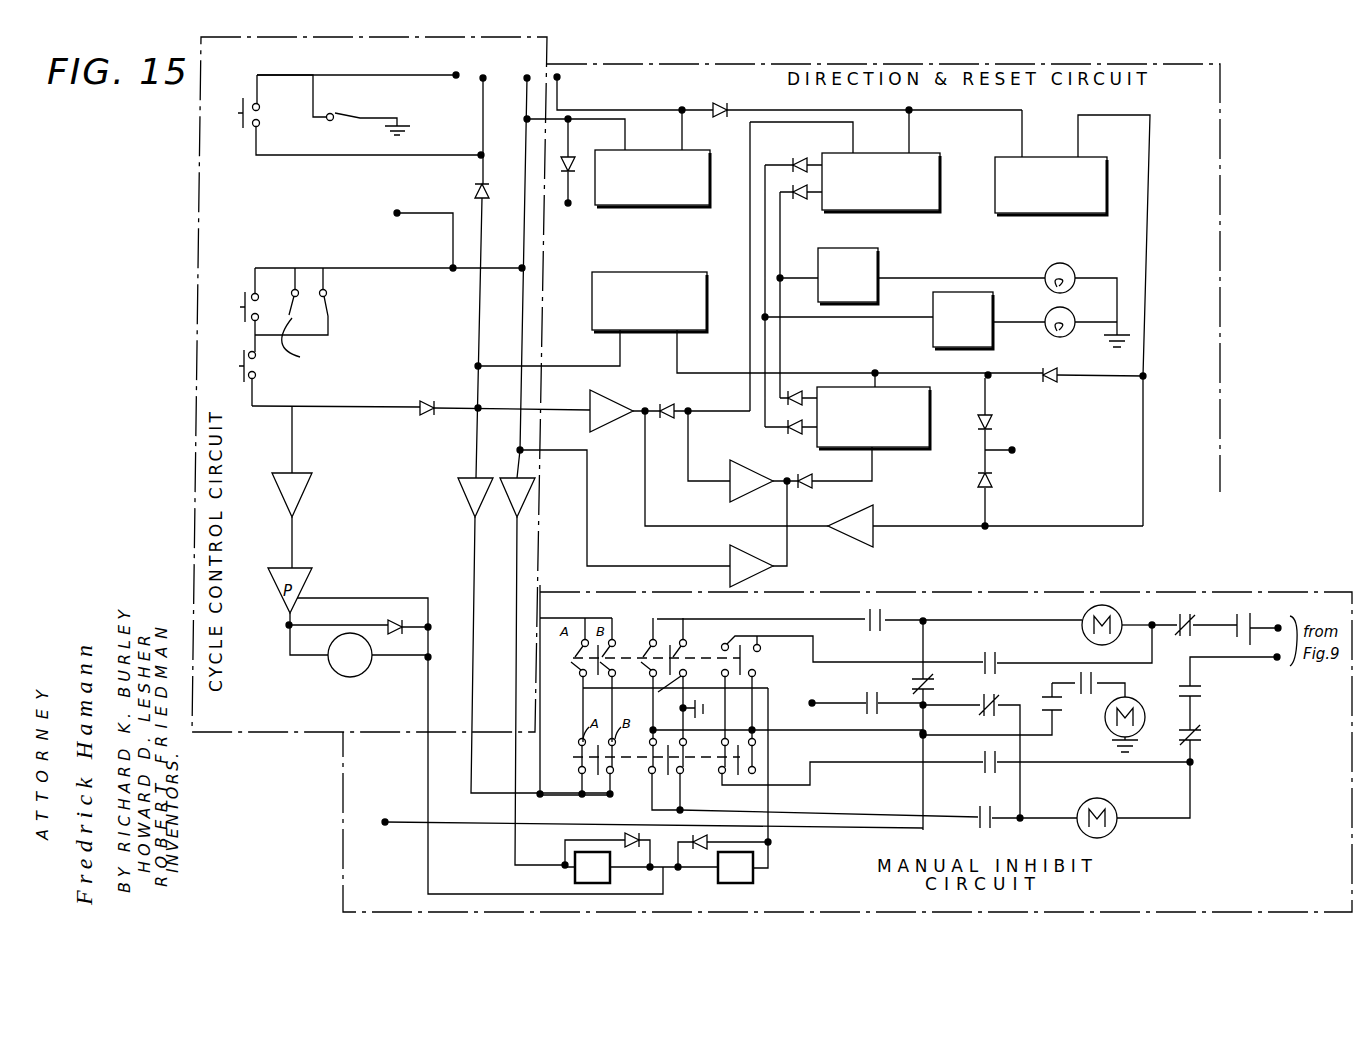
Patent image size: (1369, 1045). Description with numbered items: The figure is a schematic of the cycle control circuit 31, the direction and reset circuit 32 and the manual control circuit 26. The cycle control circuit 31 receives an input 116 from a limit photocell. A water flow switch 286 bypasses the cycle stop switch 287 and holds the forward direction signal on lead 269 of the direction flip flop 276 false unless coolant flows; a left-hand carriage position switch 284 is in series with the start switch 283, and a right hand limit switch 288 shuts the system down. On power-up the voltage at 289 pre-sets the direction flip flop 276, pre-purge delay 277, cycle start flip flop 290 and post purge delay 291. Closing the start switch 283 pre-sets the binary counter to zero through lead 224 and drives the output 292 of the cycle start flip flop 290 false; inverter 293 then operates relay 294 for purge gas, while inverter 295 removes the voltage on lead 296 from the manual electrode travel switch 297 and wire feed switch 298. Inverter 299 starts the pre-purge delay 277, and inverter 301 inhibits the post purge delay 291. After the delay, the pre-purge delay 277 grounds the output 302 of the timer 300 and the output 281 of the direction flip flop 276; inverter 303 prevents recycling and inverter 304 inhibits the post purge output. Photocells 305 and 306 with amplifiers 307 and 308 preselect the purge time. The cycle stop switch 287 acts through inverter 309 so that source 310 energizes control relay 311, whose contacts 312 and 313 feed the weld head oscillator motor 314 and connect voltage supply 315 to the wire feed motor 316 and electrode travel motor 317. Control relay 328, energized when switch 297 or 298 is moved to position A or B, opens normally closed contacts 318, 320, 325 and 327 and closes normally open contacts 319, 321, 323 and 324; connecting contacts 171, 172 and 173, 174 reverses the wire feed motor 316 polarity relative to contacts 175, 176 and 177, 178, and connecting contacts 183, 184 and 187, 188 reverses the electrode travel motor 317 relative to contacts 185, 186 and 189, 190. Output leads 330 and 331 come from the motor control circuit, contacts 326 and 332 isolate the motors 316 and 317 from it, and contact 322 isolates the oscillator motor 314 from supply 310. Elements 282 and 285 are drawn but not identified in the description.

The manual control circuit 26 is at (343, 800).
The cycle control circuit 31 is at (198, 165).
The direction and reset circuit 32 is at (1222, 292).
The input 116 is at (396, 211).
The contact 171 is at (651, 641).
The contact 172 is at (623, 702).
The contact 173 is at (724, 644).
The contact 174 is at (685, 673).
The contact 175 is at (681, 640).
The contact 176 is at (679, 716).
The contact 177 is at (760, 648).
The contact 178 is at (756, 673).
The contact 183 is at (650, 743).
The contact 184 is at (650, 790).
The contact 185 is at (698, 749).
The contact 186 is at (684, 780).
The contact 187 is at (722, 745).
The contact 188 is at (719, 771).
The contact 189 is at (756, 742).
The contact 190 is at (756, 770).
The lead 224 is at (485, 76).
The lead 269 is at (526, 94).
The direction flip flop 276 is at (662, 207).
The pre-purge delay 277 is at (880, 212).
The output 281 is at (608, 109).
The conductor 282 is at (456, 73).
The start switch 283 is at (283, 108).
The left-hand carriage position switch 284 is at (348, 110).
The switch 285 is at (249, 353).
The water flow switch 286 is at (305, 343).
The cycle stop switch 287 is at (249, 294).
The right hand limit switch 288 is at (332, 308).
The voltage 289 is at (570, 206).
The cycle start flip flop 290 is at (655, 273).
The post purge delay 291 is at (906, 449).
The output 292 is at (617, 352).
The inverter 293 is at (308, 493).
The relay 294 is at (352, 676).
The inverter 295 is at (462, 500).
The lead 296 is at (472, 752).
The manual electrode travel switch 297 is at (579, 743).
The manual wire feed switch 298 is at (659, 702).
The inverter 299 is at (612, 400).
The timer flip flop 300 is at (1040, 215).
The inverter 301 is at (762, 470).
The output 302 is at (1022, 120).
The inverter 303 is at (875, 540).
The inverter 304 is at (760, 573).
The photocell 305 is at (1072, 270).
The photocell 306 is at (1070, 312).
The amplifier 307 is at (878, 288).
The amplifier 308 is at (997, 345).
The inverter 309 is at (533, 506).
The voltage source 310 is at (387, 825).
The control relay 311 is at (573, 876).
The contact 312 is at (1057, 715).
The contact 313 is at (862, 703).
The weld head oscillator motor 314 is at (1144, 714).
The voltage supply 315 is at (812, 706).
The wire feed motor 316 is at (1082, 620).
The electrode travel motor 317 is at (1105, 832).
The relay contact 318 is at (937, 686).
The relay contact 319 is at (883, 619).
The relay contact 320 is at (998, 705).
The relay contact 321 is at (998, 664).
The contact 322 is at (1080, 696).
The relay contact 323 is at (985, 773).
The relay contact 324 is at (995, 829).
The relay contact 325 is at (1205, 730).
The relay contact 326 is at (1252, 625).
The relay contact 327 is at (1195, 625).
The control relay 328 is at (748, 883).
The output lead 330 is at (1277, 657).
The output lead 331 is at (1258, 661).
The relay contact 332 is at (1204, 690).